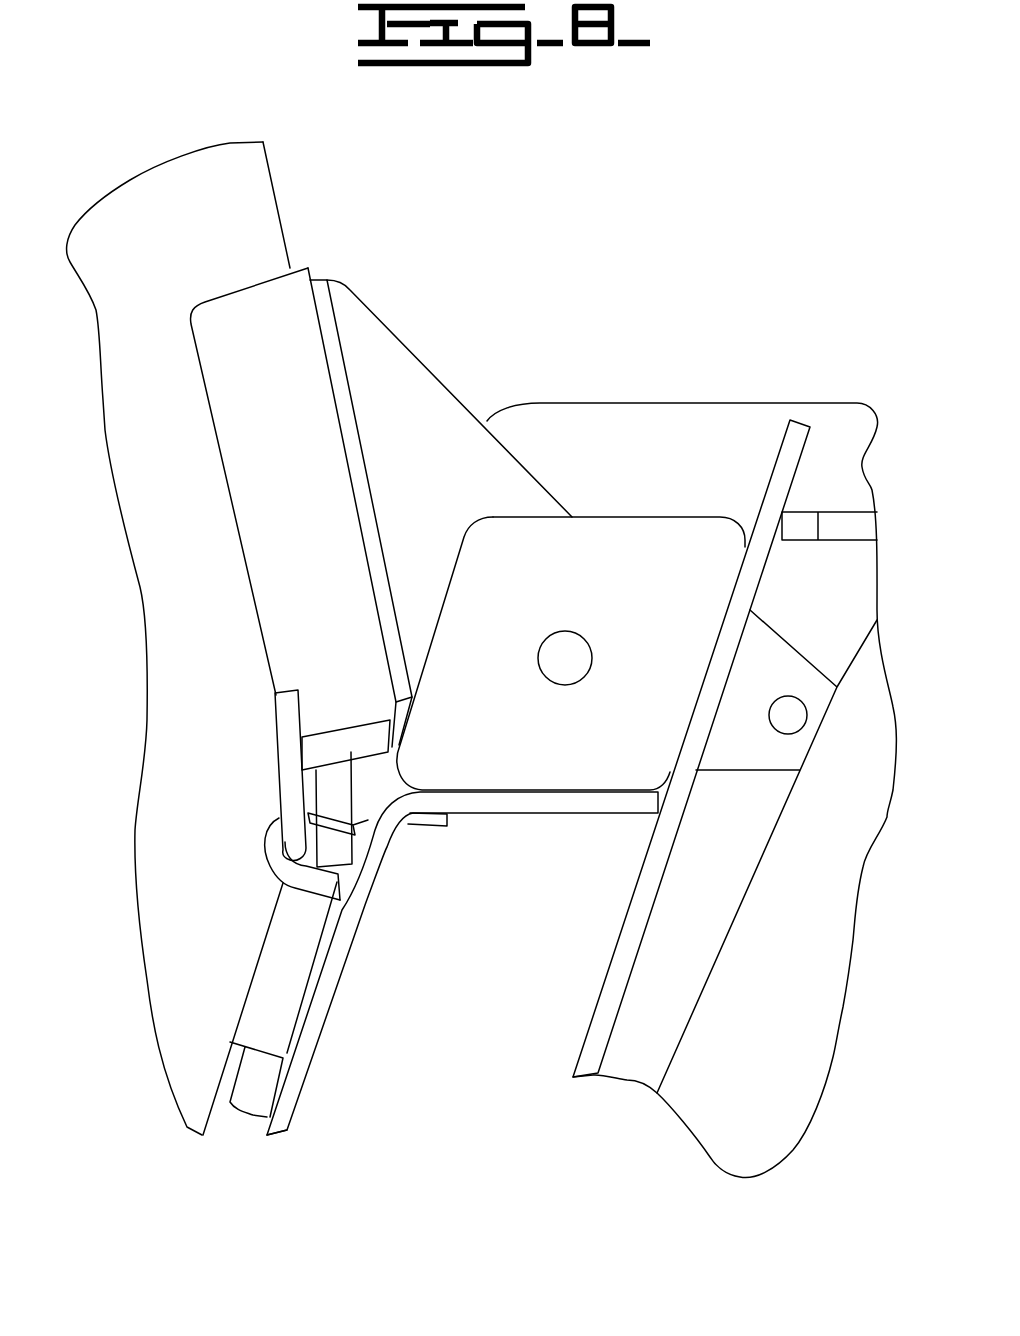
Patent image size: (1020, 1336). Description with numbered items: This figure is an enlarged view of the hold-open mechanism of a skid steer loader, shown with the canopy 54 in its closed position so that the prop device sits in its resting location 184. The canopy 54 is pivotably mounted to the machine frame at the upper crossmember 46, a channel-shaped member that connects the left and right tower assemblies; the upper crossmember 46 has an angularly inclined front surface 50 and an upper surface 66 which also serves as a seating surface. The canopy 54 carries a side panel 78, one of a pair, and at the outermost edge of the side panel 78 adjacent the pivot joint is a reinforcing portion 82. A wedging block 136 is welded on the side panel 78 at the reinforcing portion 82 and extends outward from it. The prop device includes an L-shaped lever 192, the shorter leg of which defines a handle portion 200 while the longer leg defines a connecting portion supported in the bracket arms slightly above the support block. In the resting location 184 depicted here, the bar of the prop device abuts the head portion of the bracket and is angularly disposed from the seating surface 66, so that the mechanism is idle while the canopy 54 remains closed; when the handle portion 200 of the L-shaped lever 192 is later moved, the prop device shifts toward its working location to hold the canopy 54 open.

The upper crossmember 46 is at (341, 973).
The front surface 50 is at (266, 1130).
The canopy 54 is at (277, 207).
The upper surface 66 is at (485, 790).
The side panel 78 is at (218, 779).
The reinforcing portion 82 is at (290, 411).
The wedging block 136 is at (333, 278).
The resting location 184 is at (232, 837).
The L-shaped lever 192 is at (277, 713).
The handle portion 200 is at (290, 700).